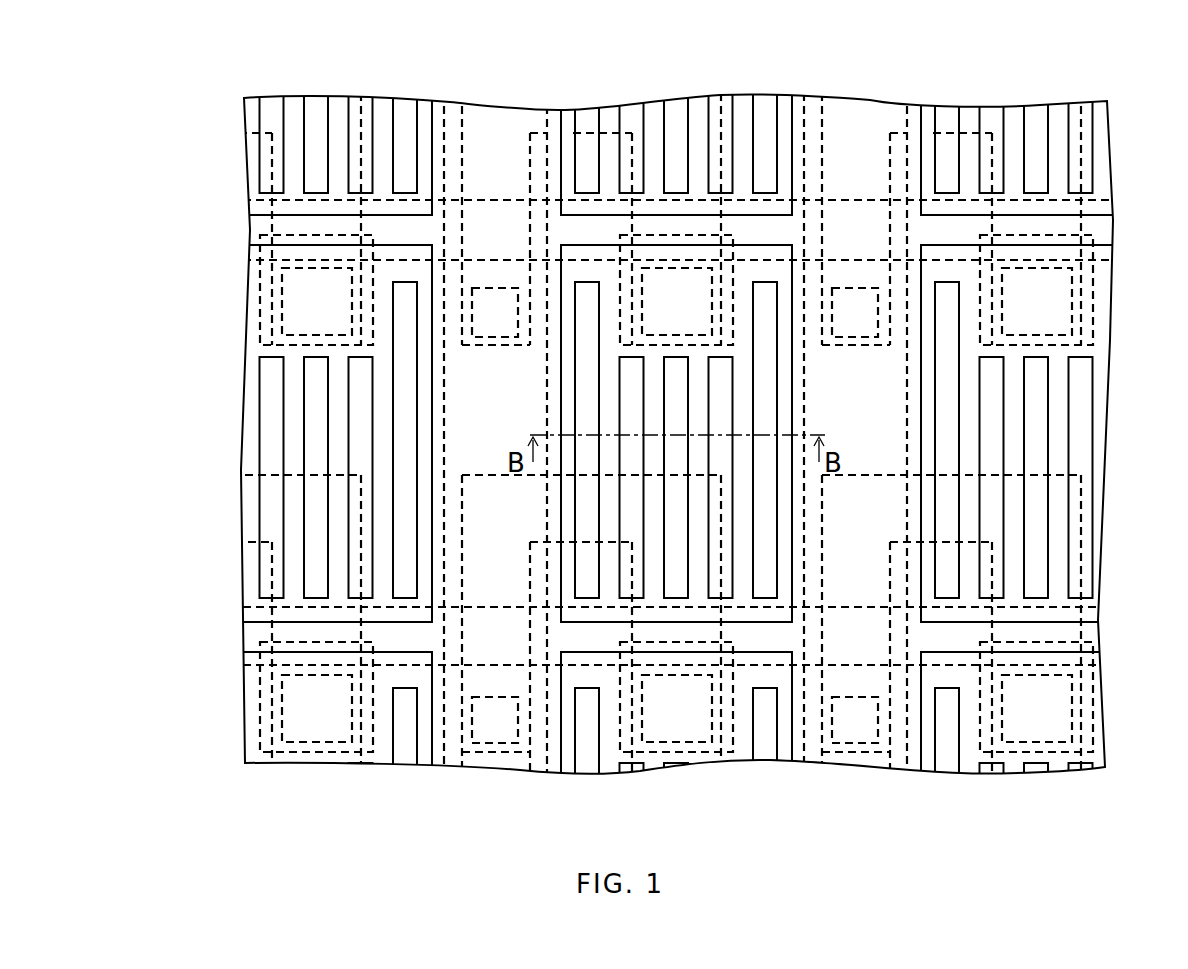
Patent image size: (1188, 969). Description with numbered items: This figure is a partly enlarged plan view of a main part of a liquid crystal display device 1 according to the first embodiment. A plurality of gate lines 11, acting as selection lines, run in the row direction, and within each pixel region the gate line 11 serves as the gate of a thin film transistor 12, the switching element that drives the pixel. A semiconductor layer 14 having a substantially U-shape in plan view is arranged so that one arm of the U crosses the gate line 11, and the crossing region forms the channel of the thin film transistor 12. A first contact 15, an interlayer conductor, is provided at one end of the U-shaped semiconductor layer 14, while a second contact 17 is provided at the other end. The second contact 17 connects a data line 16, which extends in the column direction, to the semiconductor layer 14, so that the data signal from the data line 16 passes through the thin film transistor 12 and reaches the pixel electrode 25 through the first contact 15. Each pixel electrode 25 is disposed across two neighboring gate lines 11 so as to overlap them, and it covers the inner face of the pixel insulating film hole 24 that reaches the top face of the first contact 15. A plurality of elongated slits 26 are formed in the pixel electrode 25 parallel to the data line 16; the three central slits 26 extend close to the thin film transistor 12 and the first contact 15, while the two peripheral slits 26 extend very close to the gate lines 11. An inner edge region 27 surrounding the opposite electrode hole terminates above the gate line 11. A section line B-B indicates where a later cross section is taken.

The liquid crystal display device 1 is at (990, 58).
The gate line 11 is at (260, 224).
The thin film transistor 12 is at (630, 222).
The semiconductor layer 14 is at (462, 122).
The first contact 15 is at (735, 730).
The data line 16 is at (536, 762).
The second contact 17 is at (495, 300).
The pixel insulating film hole 24 is at (280, 311).
The pixel electrode 25 is at (745, 248).
The slits 26 is at (762, 300).
The inner edge region 27 is at (660, 658).